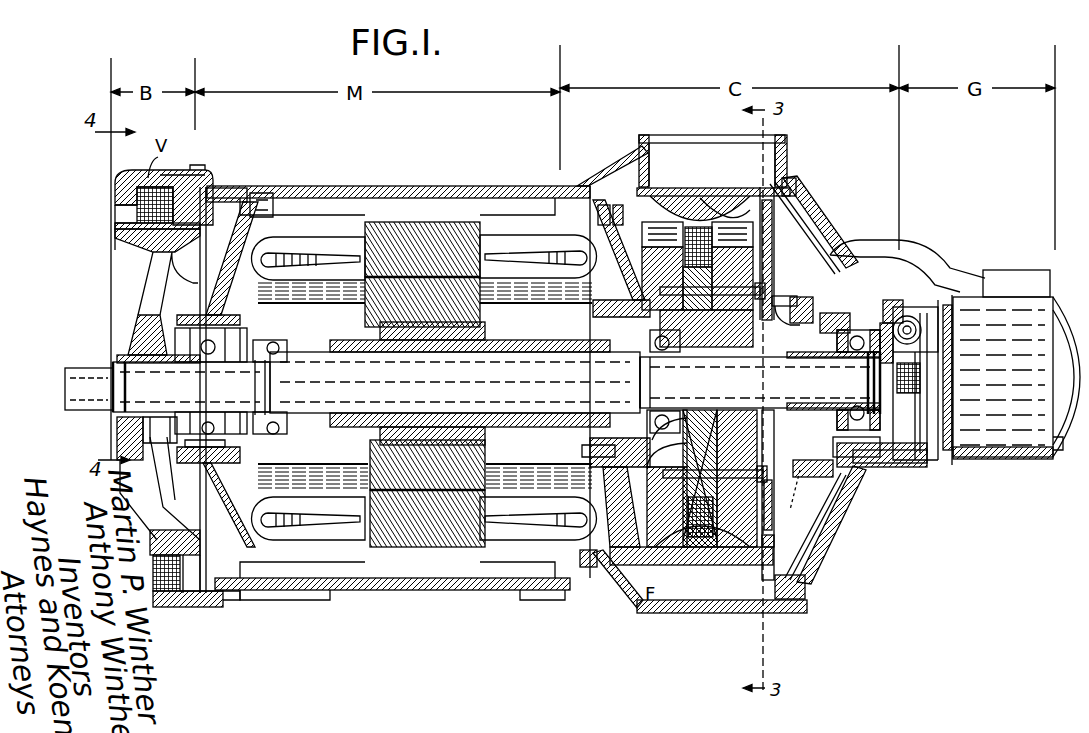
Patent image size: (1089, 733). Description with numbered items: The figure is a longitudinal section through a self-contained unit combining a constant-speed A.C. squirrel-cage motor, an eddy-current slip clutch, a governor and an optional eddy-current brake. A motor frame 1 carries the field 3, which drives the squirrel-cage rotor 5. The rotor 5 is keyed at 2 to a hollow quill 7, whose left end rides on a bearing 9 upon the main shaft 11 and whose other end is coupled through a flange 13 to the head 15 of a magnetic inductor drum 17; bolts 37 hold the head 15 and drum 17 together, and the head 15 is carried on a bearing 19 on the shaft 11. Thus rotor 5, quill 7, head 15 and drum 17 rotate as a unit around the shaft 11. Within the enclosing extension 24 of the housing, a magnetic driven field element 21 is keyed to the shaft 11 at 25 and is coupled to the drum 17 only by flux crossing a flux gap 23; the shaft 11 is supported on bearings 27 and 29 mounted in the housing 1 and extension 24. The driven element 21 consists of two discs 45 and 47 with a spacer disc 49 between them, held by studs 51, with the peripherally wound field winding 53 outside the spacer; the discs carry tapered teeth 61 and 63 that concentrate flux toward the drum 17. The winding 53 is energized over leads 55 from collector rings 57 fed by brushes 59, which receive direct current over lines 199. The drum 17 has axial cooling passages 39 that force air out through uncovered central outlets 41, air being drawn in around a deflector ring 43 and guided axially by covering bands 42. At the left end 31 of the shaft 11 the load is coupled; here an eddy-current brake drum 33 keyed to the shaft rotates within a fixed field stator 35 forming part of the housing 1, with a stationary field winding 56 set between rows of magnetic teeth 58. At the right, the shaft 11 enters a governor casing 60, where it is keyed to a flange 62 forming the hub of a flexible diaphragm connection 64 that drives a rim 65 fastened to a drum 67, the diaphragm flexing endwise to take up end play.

The motor frame 1 is at (315, 186).
The key 2 is at (370, 332).
The field 3 is at (495, 235).
The squirrel-cage rotor 5 is at (470, 305).
The hollow quill 7 is at (345, 335).
The bearing 9 is at (275, 340).
The main shaft 11 is at (352, 395).
The flange 13 is at (575, 330).
The head 15 is at (615, 198).
The magnetic inductor drum 17 is at (730, 200).
The bearing 19 is at (650, 402).
The magnetic driven field element 21 is at (775, 506).
The flux gap 23 is at (605, 215).
The enclosing extension 24 is at (800, 180).
The key 25 is at (733, 386).
The bearing 27 is at (205, 465).
The bearing 29 is at (860, 475).
The left end of shaft 31 is at (100, 386).
The eddy-current brake drum 33 is at (135, 258).
The field stator 35 is at (117, 186).
The bolts 37 is at (590, 186).
The axial cooling passages 39 is at (670, 196).
The central outlets 41 is at (715, 200).
The covering bands 42 is at (622, 582).
The deflector ring 43 is at (774, 222).
The disc 45 is at (697, 397).
The disc 47 is at (734, 397).
The spacer disc 49 is at (700, 478).
The studs 51 is at (765, 290).
The field winding 53 is at (695, 225).
The leads 55 is at (780, 308).
The field winding 56 is at (140, 207).
The collector rings 57 is at (828, 362).
The magnetic teeth 58 is at (118, 227).
The brushes 59 is at (829, 385).
The casing 60 is at (983, 460).
The tapered teeth 61 is at (675, 252).
The flange 62 is at (882, 390).
The tapered teeth 63 is at (745, 252).
The flexible diaphragm connection 64 is at (925, 300).
The rim 65 is at (940, 305).
The drum 67 is at (950, 346).
The lines 199 is at (840, 255).